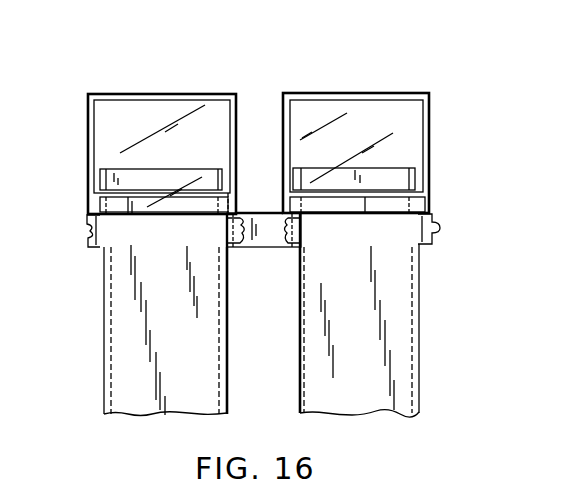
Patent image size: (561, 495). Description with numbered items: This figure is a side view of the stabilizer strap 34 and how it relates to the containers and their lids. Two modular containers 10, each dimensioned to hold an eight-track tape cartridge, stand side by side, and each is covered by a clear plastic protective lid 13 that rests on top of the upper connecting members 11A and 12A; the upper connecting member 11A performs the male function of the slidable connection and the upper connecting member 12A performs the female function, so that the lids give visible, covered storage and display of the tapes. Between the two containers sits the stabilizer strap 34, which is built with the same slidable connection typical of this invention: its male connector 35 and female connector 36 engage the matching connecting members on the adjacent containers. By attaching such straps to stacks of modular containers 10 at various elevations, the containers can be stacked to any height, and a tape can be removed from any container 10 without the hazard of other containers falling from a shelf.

The modular container 10 is at (300, 377).
The upper connecting member 11A is at (440, 228).
The upper connecting member 12A is at (88, 225).
The clear plastic protective lid 13 is at (294, 93).
The stabilizer strap 34 is at (248, 222).
The male connector 35 is at (289, 228).
The female connector 36 is at (243, 234).